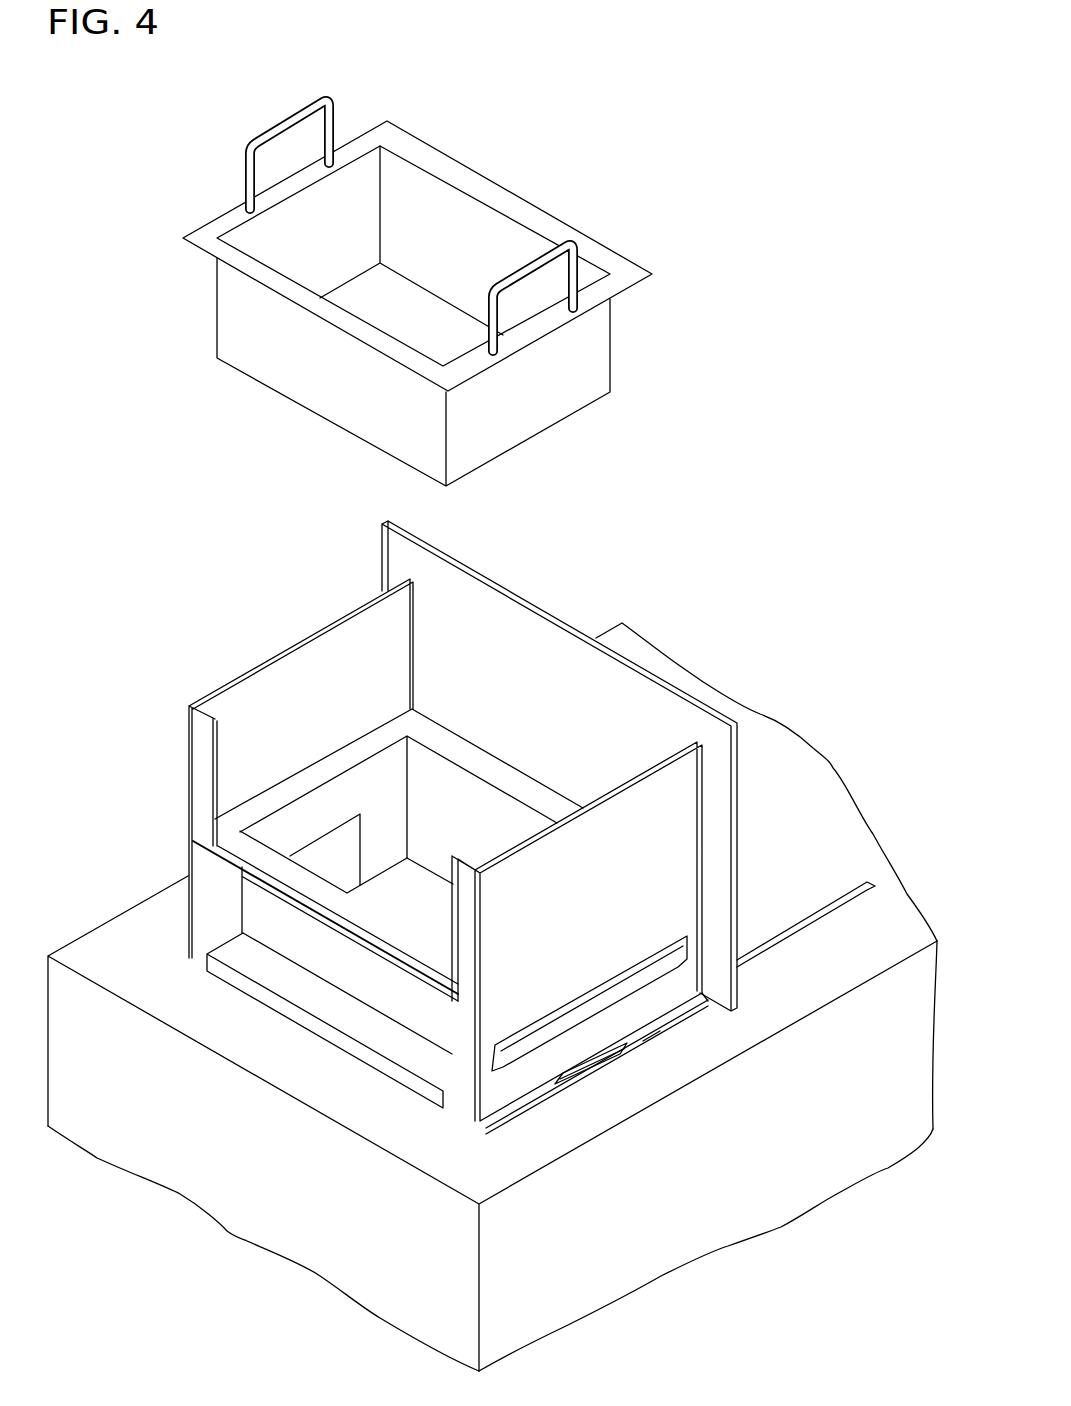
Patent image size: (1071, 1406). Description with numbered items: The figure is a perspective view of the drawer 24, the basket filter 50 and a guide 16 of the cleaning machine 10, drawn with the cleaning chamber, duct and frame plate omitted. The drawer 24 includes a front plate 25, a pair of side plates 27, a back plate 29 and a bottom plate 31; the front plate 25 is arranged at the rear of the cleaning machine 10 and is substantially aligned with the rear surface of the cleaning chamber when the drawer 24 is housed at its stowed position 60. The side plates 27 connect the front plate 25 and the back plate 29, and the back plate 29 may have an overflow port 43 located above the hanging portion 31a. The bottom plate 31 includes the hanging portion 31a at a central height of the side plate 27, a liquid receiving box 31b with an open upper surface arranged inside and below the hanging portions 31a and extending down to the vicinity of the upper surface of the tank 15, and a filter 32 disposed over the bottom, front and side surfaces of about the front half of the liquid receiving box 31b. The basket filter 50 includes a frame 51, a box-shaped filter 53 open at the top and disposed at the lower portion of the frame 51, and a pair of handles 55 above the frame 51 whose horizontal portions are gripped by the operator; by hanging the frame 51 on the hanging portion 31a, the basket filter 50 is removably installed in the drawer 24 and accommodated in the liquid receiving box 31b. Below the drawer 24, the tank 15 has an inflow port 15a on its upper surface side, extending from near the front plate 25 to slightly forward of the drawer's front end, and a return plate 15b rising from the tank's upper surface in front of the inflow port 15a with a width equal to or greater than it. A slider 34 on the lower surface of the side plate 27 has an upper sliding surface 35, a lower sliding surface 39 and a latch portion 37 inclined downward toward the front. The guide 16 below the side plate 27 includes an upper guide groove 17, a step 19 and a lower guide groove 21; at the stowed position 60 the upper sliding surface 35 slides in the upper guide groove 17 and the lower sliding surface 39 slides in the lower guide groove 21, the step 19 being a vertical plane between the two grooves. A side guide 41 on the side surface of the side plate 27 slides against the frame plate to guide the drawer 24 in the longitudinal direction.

The cleaning machine 10 is at (851, 118).
The basket filter 50 is at (501, 171).
The frame 51 is at (535, 207).
The filter 53 is at (615, 328).
The handles 55 is at (270, 129).
The drawer 24 is at (503, 558).
The stowed position 60 is at (451, 821).
The front plate 25 is at (558, 615).
The side plate 27 is at (687, 833).
The back plate 29 is at (187, 737).
The overflow port 43 is at (232, 784).
The bottom plate 31 is at (322, 598).
The hanging portion 31a is at (388, 722).
The liquid receiving box 31b is at (326, 784).
The filter 32 is at (318, 836).
The tank 15 is at (148, 1048).
The inflow port 15a is at (243, 940).
The return plate 15b is at (320, 1007).
The side guide 41 is at (683, 933).
The slider 34 is at (663, 904).
The upper sliding surface 35 is at (652, 1036).
The latch portion 37 is at (567, 1090).
The lower sliding surface 39 is at (525, 1128).
The guide 16 is at (720, 1203).
The upper guide groove 17 is at (687, 995).
The step 19 is at (615, 1052).
The lower guide groove 21 is at (593, 1060).